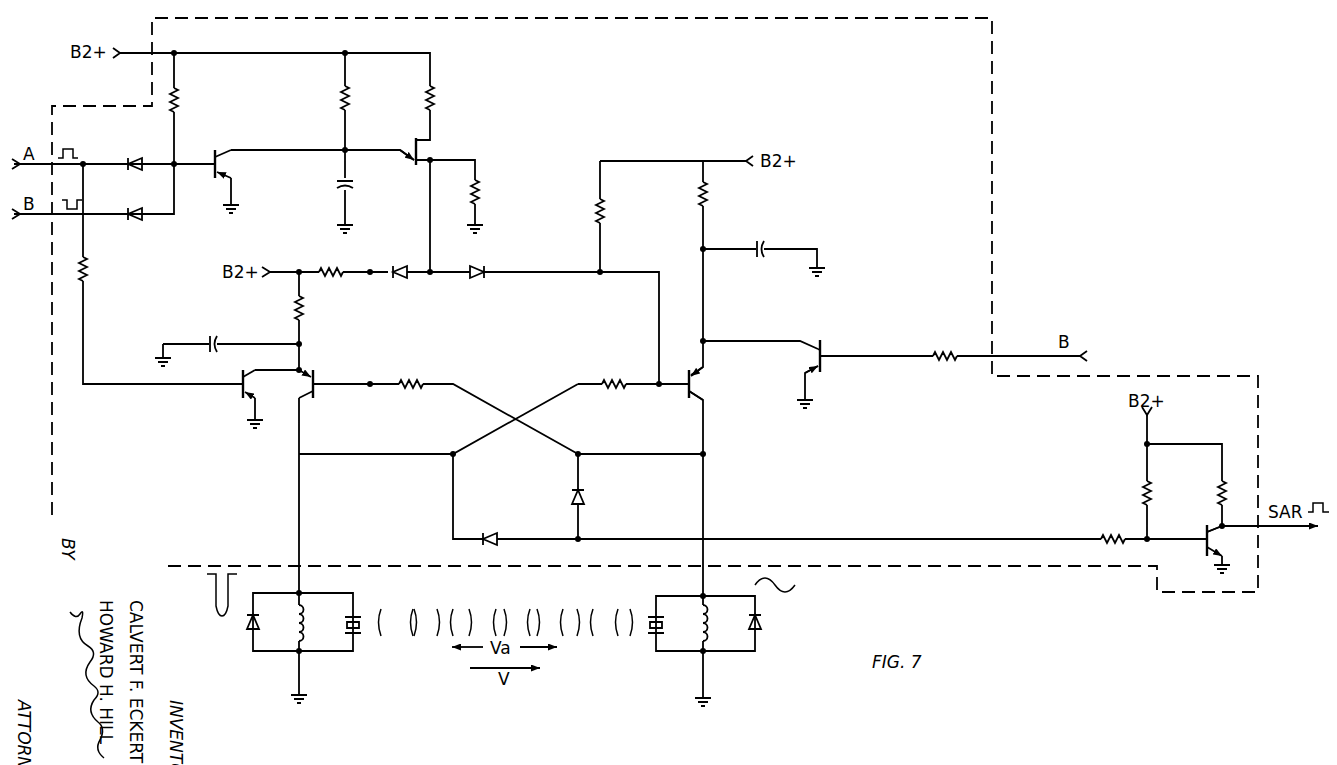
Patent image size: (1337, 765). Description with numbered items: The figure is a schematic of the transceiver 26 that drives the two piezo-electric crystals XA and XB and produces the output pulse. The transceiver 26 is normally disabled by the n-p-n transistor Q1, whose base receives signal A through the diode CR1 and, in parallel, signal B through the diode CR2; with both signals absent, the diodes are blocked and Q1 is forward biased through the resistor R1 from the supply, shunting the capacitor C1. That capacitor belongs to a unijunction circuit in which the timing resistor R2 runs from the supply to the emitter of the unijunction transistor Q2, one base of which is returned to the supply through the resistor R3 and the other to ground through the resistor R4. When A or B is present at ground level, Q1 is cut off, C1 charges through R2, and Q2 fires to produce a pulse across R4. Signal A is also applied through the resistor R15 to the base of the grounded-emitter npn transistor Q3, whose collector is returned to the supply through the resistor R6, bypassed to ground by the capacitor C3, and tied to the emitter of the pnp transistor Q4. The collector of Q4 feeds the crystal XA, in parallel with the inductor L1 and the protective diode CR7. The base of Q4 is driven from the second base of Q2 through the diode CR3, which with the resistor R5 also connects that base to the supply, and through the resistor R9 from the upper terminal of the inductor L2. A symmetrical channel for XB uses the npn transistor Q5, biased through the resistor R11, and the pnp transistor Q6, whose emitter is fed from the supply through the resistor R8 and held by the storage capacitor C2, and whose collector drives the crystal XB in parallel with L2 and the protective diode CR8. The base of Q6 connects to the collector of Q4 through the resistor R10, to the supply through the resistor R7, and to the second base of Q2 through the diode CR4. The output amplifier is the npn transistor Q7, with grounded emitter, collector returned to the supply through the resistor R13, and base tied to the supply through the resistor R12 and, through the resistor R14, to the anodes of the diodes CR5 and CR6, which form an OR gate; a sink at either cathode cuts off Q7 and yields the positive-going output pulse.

The transceiver 26 is at (813, 82).
The resistor R1 is at (188, 100).
The timing resistor R2 is at (357, 98).
The resistor R3 is at (444, 98).
The resistor R4 is at (488, 193).
The resistor R5 is at (331, 260).
The resistor R6 is at (313, 308).
The resistor R7 is at (614, 211).
The resistor R8 is at (716, 194).
The resistor R9 is at (410, 373).
The resistor R10 is at (616, 374).
The resistor R11 is at (948, 347).
The resistor R12 is at (1129, 495).
The resistor R13 is at (1205, 495).
The resistor R14 is at (1113, 550).
The resistor R15 is at (104, 269).
The capacitor C1 is at (332, 191).
The storage capacitor C2 is at (761, 239).
The capacitor C3 is at (211, 333).
The diode CR1 is at (134, 153).
The diode CR2 is at (134, 204).
The diode CR3 is at (400, 261).
The diode CR4 is at (479, 261).
The diode CR5 is at (495, 529).
The diode CR6 is at (598, 499).
The protective diode CR7 is at (271, 627).
The protective diode CR8 is at (774, 626).
The n-p-n transistor Q1 is at (236, 164).
The unijunction transistor Q2 is at (428, 151).
The npn transistor Q3 is at (259, 384).
The pnp transistor Q4 is at (320, 382).
The npn transistor Q5 is at (827, 356).
The pnp transistor Q6 is at (706, 383).
The npn transistor Q7 is at (1224, 540).
The inductor L1 is at (316, 623).
The inductor L2 is at (719, 623).
The piezo-electric crystal XA is at (364, 638).
The piezo-electric crystal XB is at (645, 639).